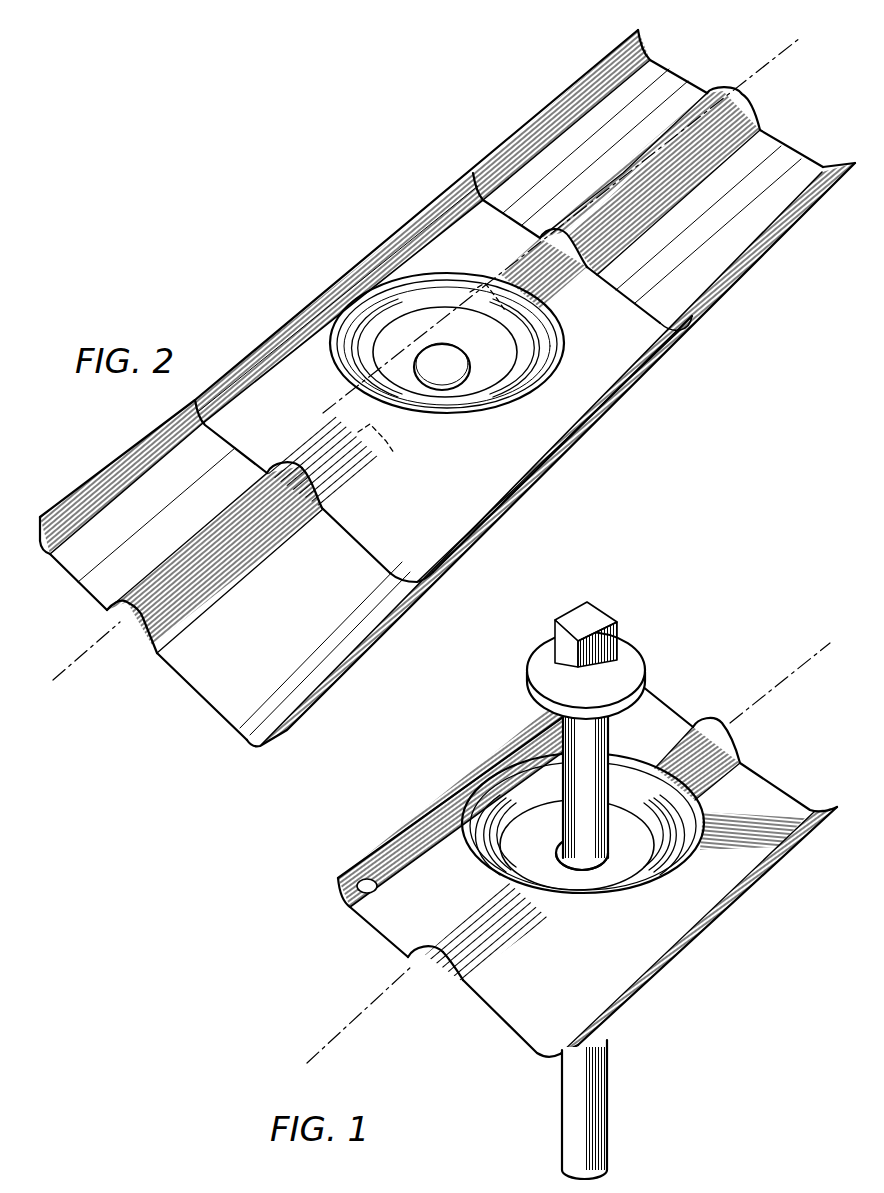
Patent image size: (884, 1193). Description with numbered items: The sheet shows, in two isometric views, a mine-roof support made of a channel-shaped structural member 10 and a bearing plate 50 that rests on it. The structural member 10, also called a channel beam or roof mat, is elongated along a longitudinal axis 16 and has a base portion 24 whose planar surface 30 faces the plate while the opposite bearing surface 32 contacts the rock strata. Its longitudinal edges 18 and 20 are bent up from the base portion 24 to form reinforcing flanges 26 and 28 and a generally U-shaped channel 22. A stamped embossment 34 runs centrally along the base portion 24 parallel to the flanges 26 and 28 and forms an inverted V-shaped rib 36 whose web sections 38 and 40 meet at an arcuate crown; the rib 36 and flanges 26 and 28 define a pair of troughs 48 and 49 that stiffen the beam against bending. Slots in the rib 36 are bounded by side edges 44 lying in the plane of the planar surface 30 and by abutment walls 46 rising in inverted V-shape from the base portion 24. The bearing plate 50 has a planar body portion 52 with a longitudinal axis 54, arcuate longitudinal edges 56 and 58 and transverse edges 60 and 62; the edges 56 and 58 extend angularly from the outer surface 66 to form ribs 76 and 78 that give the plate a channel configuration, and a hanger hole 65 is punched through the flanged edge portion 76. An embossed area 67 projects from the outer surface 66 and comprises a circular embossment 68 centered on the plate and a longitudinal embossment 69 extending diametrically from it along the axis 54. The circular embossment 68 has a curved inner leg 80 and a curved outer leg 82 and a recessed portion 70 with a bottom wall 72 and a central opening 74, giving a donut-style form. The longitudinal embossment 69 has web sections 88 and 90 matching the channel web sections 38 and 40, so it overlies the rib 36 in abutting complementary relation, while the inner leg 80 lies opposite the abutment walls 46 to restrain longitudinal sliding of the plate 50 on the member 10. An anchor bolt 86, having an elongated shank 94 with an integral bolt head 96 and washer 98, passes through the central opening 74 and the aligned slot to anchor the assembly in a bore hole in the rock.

In FIG. 2, the structural member 10 is at (487, 130).
In FIG. 2, the longitudinal axis 16 is at (776, 56).
In FIG. 2, the longitudinal edge 18 is at (66, 492).
In FIG. 2, the longitudinal edge 20 is at (333, 689).
In FIG. 2, the channel 22 is at (218, 666).
In FIG. 2, the base portion 24 is at (185, 663).
In FIG. 2, the reinforcing flange 26 is at (90, 449).
In FIG. 2, the reinforcing flange 28 is at (369, 661).
In FIG. 2, the planar surface 30 is at (583, 159).
In FIG. 2, the bearing surface 32 is at (64, 580).
In FIG. 2, the embossment 34 is at (621, 158).
In FIG. 2, the rib 36 is at (667, 188).
In FIG. 2, the web section 38 is at (112, 613).
In FIG. 2, the web section 40 is at (140, 636).
In FIG. 2, the longitudinal side edge 44 is at (448, 434).
In FIG. 2, the abutment wall 46 is at (478, 283).
In FIG. 2, the trough 48 is at (667, 78).
In FIG. 2, the trough 49 is at (776, 145).
In FIG. 2, the bearing plate 50 is at (410, 235).
In FIG. 1, the bearing plate 50 is at (664, 986).
In FIG. 2, the planar body portion 52 is at (292, 330).
In FIG. 1, the planar body portion 52 is at (690, 968).
In FIG. 1, the longitudinal axis 54 is at (822, 650).
In FIG. 2, the longitudinal edge 56 is at (336, 290).
In FIG. 1, the longitudinal edge 56 is at (487, 772).
In FIG. 2, the longitudinal edge 58 is at (510, 497).
In FIG. 1, the longitudinal edge 58 is at (771, 869).
In FIG. 2, the transverse edge 60 is at (350, 565).
In FIG. 1, the transverse edge 60 is at (489, 1042).
In FIG. 2, the transverse edge 62 is at (657, 296).
In FIG. 1, the transverse edge 62 is at (800, 775).
In FIG. 1, the opening 65 is at (362, 878).
In FIG. 2, the outer surface 66 is at (446, 533).
In FIG. 1, the outer surface 66 is at (424, 912).
In FIG. 2, the embossed area 67 is at (435, 318).
In FIG. 1, the embossed area 67 is at (458, 833).
In FIG. 2, the circular embossment 68 is at (557, 315).
In FIG. 1, the circular embossment 68 is at (490, 815).
In FIG. 2, the longitudinal embossment 69 is at (540, 262).
In FIG. 1, the longitudinal embossment 69 is at (686, 747).
In FIG. 2, the recessed portion 70 is at (472, 418).
In FIG. 1, the recessed portion 70 is at (620, 870).
In FIG. 1, the bottom wall 72 is at (550, 850).
In FIG. 2, the central opening 74 is at (437, 345).
In FIG. 2, the rib 76 is at (195, 422).
In FIG. 1, the rib 76 is at (330, 900).
In FIG. 2, the rib 78 is at (392, 579).
In FIG. 1, the rib 78 is at (542, 1068).
In FIG. 2, the inner leg 80 is at (530, 351).
In FIG. 1, the inner leg 80 is at (650, 800).
In FIG. 2, the outer leg 82 is at (482, 430).
In FIG. 1, the outer leg 82 is at (690, 856).
In FIG. 1, the anchor bolt 86 is at (520, 685).
In FIG. 2, the web section 88 is at (251, 496).
In FIG. 1, the web section 88 is at (415, 967).
In FIG. 2, the web section 90 is at (313, 509).
In FIG. 1, the web section 90 is at (456, 974).
In FIG. 1, the shank 94 is at (582, 793).
In FIG. 1, the bolt head 96 is at (597, 613).
In FIG. 1, the washer 98 is at (628, 652).